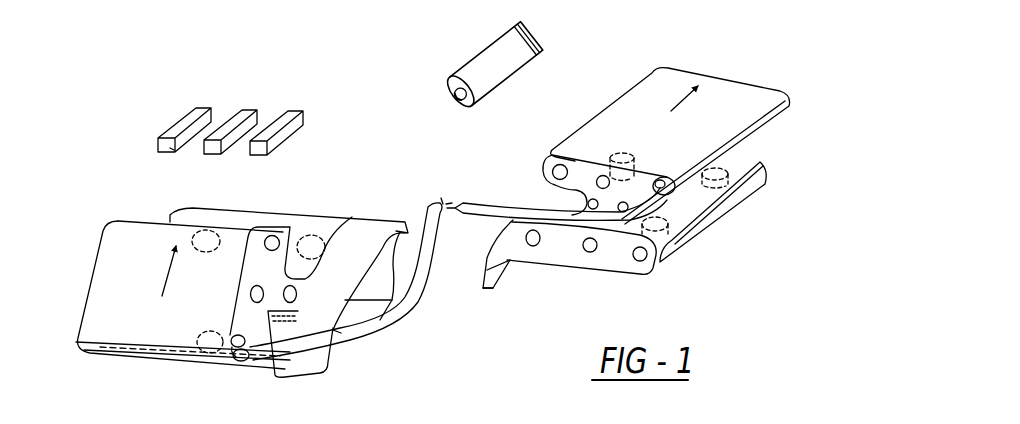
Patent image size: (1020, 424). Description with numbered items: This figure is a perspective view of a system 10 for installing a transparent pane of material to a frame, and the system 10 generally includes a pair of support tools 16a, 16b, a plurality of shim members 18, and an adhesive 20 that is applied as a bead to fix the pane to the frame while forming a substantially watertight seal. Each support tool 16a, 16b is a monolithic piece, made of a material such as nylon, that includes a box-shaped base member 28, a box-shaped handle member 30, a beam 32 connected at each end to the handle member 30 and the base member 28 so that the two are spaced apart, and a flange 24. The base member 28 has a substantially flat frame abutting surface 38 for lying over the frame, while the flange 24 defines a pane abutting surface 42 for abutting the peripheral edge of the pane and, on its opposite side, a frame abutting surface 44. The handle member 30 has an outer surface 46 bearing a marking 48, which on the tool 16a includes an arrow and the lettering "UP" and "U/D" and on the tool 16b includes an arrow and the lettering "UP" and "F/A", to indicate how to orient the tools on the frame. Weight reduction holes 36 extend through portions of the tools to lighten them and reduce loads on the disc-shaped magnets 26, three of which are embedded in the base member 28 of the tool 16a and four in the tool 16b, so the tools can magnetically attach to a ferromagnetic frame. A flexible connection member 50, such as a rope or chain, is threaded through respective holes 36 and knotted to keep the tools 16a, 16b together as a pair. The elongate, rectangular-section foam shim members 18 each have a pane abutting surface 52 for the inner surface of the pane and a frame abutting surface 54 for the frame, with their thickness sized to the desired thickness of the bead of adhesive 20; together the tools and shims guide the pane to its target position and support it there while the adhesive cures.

The system 10 is at (193, 44).
The support tool 16a is at (84, 248).
The support tool 16b is at (697, 58).
The shim member 18 is at (318, 100).
The adhesive 20 is at (478, 44).
The flange 24 is at (395, 272).
The magnet 26 is at (224, 226).
The base member 28 is at (327, 303).
The handle member 30 is at (93, 333).
The beam 32 is at (262, 338).
The weight reduction hole 36 is at (275, 240).
The frame abutting surface 38 is at (322, 348).
The pane abutting surface 42 is at (390, 217).
The frame abutting surface 44 is at (376, 300).
The outer surface 46 is at (120, 258).
The marking 48 is at (158, 260).
The connection member 50 is at (430, 204).
The pane abutting surface 52 is at (175, 130).
The frame abutting surface 54 is at (178, 152).